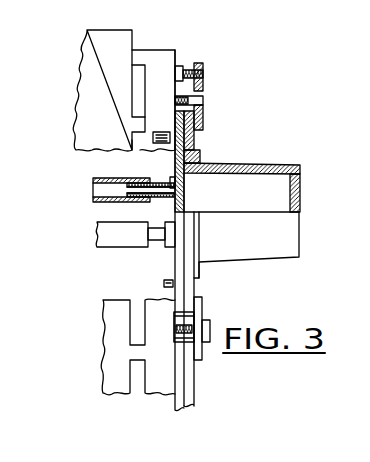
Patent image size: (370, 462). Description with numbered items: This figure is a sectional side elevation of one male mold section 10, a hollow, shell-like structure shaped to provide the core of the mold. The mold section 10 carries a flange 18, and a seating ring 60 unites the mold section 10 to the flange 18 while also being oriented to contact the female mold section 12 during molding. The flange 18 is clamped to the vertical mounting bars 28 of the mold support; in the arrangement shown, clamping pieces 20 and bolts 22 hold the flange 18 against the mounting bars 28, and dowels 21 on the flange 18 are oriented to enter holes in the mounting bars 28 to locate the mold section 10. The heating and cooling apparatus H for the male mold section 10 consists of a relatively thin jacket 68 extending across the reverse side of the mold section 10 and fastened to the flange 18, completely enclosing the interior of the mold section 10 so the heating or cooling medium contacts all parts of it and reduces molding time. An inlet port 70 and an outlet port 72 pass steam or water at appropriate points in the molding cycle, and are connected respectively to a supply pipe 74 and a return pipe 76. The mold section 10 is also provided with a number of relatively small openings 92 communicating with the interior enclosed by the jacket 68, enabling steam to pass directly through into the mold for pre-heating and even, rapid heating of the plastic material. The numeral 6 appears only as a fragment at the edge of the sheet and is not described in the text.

The male mold section 10 is at (295, 167).
The flange 18 is at (196, 139).
The clamping pieces 20 is at (203, 123).
The dowels 21 is at (174, 128).
The bolts 22 is at (204, 79).
The vertical mounting bars 28 is at (158, 58).
The seating ring 60 is at (200, 155).
The jacket 68 is at (173, 166).
The inlet port 70 is at (189, 192).
The outlet port 72 is at (193, 239).
The supply pipe 74 is at (90, 196).
The return pipe 76 is at (95, 236).
The openings 92 is at (280, 164).
The heating and cooling apparatus H is at (88, 173).
The adjacent figure fragment 6 is at (365, 133).
The female mold section 12 is at (364, 159).